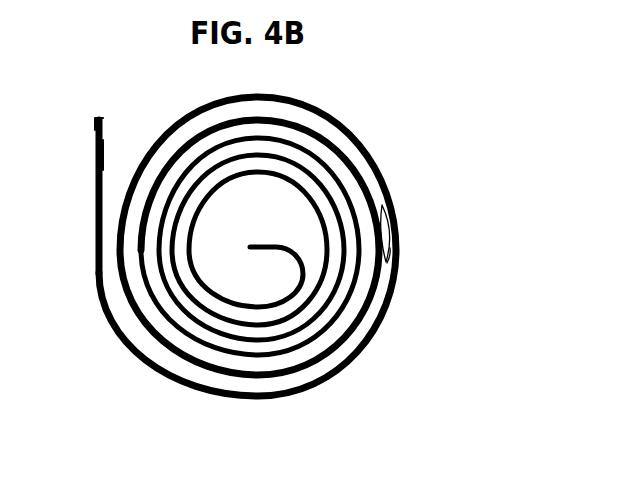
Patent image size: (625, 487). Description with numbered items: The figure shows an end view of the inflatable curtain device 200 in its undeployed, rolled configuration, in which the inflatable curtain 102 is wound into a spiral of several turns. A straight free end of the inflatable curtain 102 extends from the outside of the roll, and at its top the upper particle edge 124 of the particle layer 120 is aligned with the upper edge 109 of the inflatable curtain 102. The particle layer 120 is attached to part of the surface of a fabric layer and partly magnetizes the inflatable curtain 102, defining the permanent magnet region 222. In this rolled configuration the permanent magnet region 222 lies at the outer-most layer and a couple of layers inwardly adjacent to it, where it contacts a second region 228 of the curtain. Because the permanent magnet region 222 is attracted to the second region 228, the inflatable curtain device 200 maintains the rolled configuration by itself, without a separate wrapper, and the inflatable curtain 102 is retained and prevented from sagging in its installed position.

The inflatable curtain device 200 is at (376, 101).
The inflatable curtain 102 is at (96, 177).
The upper edge 109 is at (96, 119).
The upper particle edge 124 is at (103, 119).
The particle layer 120 is at (104, 157).
The permanent magnet region 222 is at (388, 196).
The second region 228 is at (387, 263).